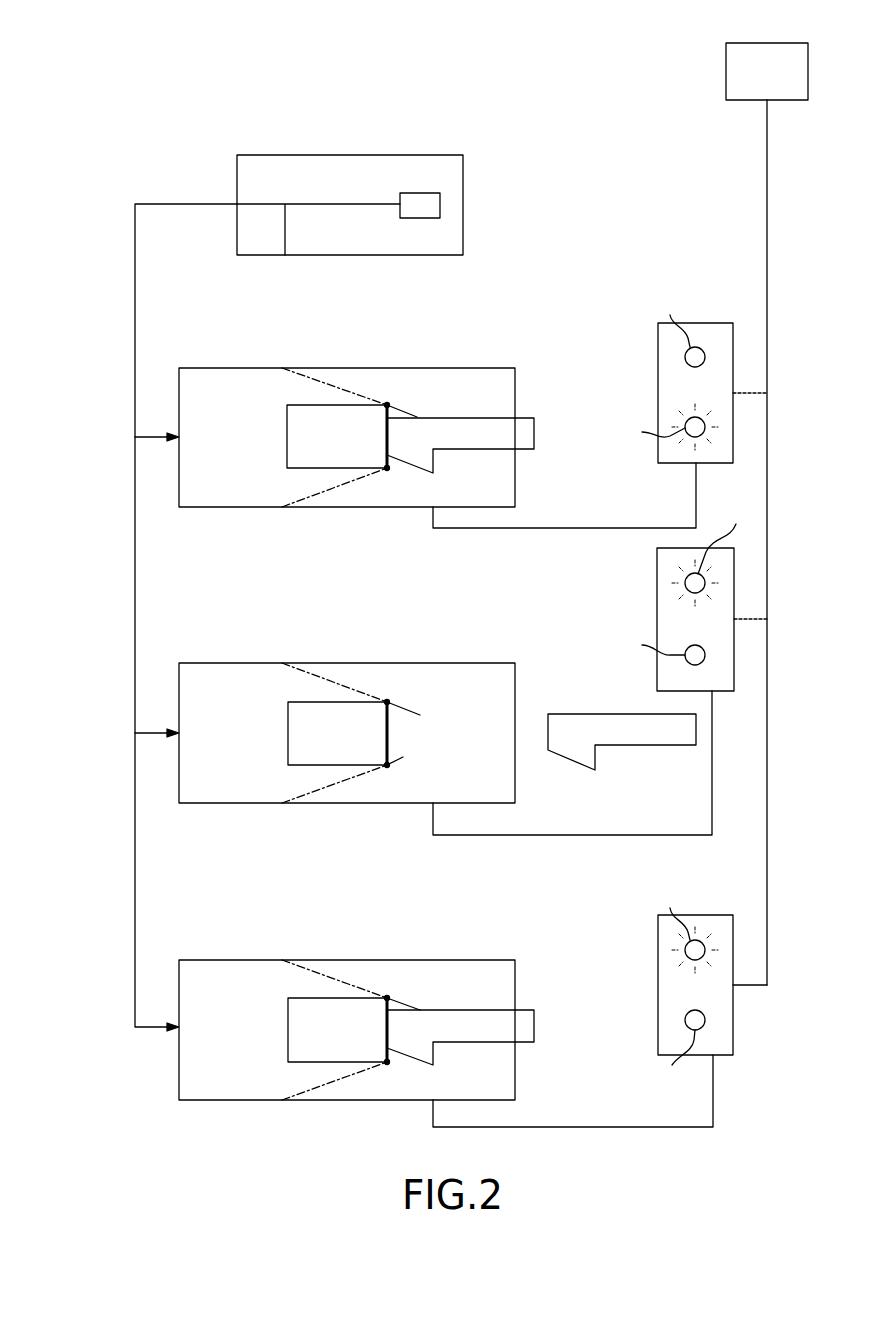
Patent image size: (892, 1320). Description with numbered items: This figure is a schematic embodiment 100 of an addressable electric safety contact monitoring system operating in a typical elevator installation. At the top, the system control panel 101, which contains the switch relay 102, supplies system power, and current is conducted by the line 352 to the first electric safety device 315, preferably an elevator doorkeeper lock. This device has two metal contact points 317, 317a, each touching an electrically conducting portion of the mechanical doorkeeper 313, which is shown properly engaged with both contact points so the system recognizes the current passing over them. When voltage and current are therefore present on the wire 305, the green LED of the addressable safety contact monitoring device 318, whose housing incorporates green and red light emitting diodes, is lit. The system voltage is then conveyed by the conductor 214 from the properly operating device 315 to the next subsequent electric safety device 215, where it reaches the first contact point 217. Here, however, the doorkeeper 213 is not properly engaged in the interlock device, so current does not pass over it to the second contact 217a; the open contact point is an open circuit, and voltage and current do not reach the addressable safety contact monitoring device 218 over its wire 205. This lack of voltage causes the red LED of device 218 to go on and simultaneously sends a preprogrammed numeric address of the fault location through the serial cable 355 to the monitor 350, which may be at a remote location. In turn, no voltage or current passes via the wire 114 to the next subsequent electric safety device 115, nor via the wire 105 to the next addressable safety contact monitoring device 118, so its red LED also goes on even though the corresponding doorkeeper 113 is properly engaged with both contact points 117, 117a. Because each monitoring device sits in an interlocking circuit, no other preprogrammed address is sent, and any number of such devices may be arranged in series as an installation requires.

The schematic embodiment 100 is at (211, 112).
The system control panel 101 is at (298, 193).
The switch relay 102 is at (428, 218).
The monitor 350 is at (726, 73).
The serial cable 355 is at (767, 141).
The line 352 is at (135, 329).
The conductor 214 is at (135, 577).
The wire 114 is at (135, 867).
The first electric safety device 315 is at (248, 450).
The metal contact point 317 is at (410, 415).
The metal contact point 317a is at (392, 470).
The mechanical doorkeeper 313 is at (535, 436).
The wire 305 is at (516, 528).
The addressable safety contact monitoring device 318 is at (658, 357).
The electric safety device 215 is at (248, 748).
The first contact point 217 is at (410, 712).
The second contact 217a is at (398, 757).
The doorkeeper 213 is at (620, 714).
The second indicator line 205 is at (548, 835).
The addressable safety contact monitoring device 218 is at (657, 605).
The electric safety device 115 is at (248, 1044).
The contact point 117 is at (410, 1010).
The contact point 117a is at (392, 1064).
The doorkeeper 113 is at (535, 1026).
The wire 105 is at (594, 1127).
The addressable safety contact monitoring device 118 is at (658, 967).